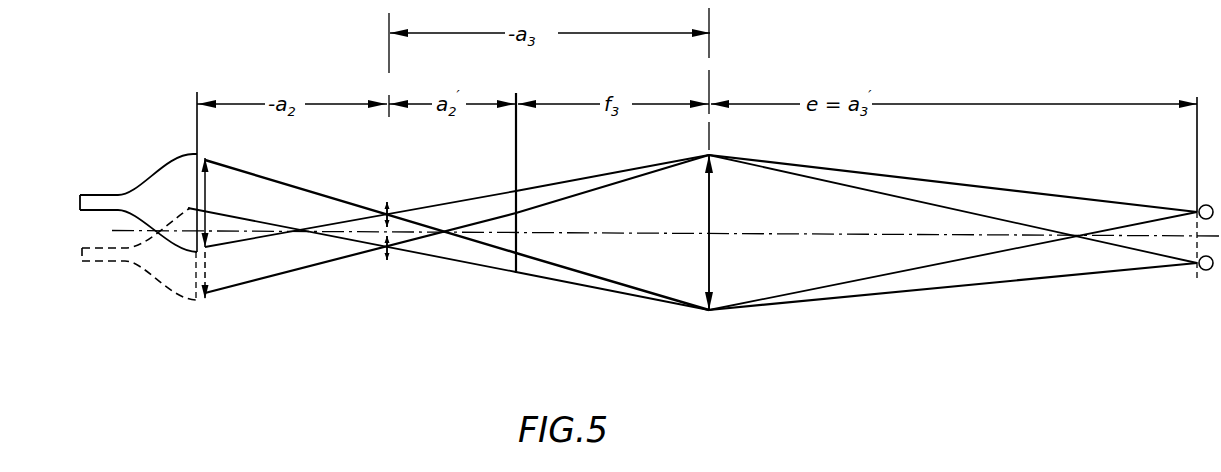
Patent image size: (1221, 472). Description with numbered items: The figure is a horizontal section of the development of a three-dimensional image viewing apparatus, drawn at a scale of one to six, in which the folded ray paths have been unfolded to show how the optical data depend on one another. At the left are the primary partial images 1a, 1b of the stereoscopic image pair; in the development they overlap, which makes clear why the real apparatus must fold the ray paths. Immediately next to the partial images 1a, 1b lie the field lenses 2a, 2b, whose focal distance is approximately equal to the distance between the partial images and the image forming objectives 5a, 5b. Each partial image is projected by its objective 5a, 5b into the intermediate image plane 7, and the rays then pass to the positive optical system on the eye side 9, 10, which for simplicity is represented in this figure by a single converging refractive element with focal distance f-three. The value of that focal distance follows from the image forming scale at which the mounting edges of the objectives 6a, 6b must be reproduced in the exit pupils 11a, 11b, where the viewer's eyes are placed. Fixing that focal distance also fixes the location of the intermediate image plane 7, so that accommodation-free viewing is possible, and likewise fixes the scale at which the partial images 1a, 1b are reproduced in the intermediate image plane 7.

The primary partial image 1a is at (125, 192).
The primary partial image 1b is at (158, 282).
The field lens 2a is at (204, 156).
The field lens 2b is at (214, 298).
The image forming objective 5a is at (387, 203).
The objective 6a is at (374, 196).
The image forming objective 5b is at (388, 259).
The objective 6b is at (409, 264).
The intermediate image plane 7 is at (517, 242).
The positive optical system on the eye side 9 is at (711, 262).
The positive optical system on the eye side 10 is at (737, 232).
The exit pupil 11a is at (1196, 265).
The exit pupil 11b is at (1197, 210).